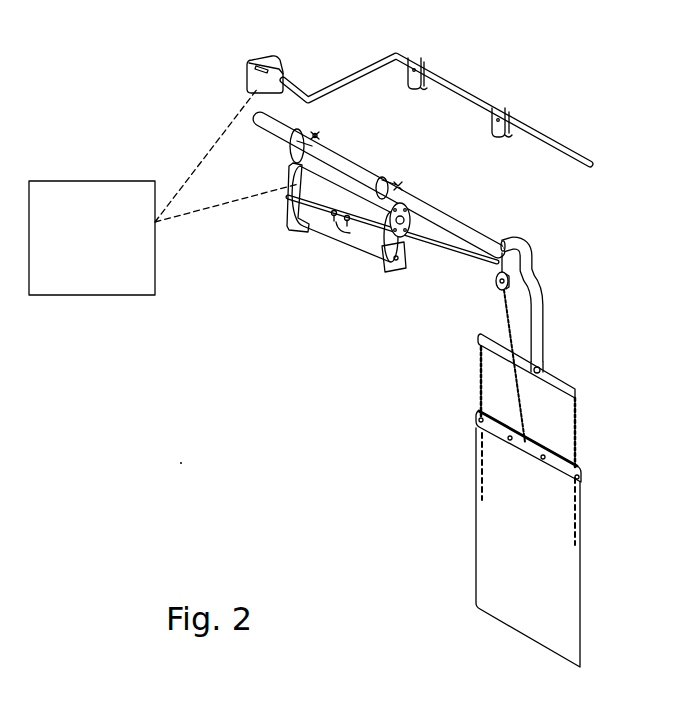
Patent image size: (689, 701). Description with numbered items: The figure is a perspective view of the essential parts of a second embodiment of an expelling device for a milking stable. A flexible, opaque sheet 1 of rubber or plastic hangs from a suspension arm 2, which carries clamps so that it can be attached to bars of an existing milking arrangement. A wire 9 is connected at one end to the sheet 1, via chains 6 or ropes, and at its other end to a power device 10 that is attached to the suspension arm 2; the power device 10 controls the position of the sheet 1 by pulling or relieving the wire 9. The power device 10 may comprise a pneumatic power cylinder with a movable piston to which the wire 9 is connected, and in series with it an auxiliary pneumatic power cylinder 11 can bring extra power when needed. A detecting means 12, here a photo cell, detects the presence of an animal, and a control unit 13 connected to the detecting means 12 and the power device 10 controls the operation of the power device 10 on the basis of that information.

The sheet 1 is at (507, 546).
The suspension arm 2 is at (440, 213).
The chains 6 is at (477, 411).
The wire 9 is at (440, 266).
The power device 10 is at (300, 234).
The auxiliary pneumatic power cylinder 11 is at (352, 240).
The detecting means 12 is at (253, 80).
The control unit 13 is at (98, 274).